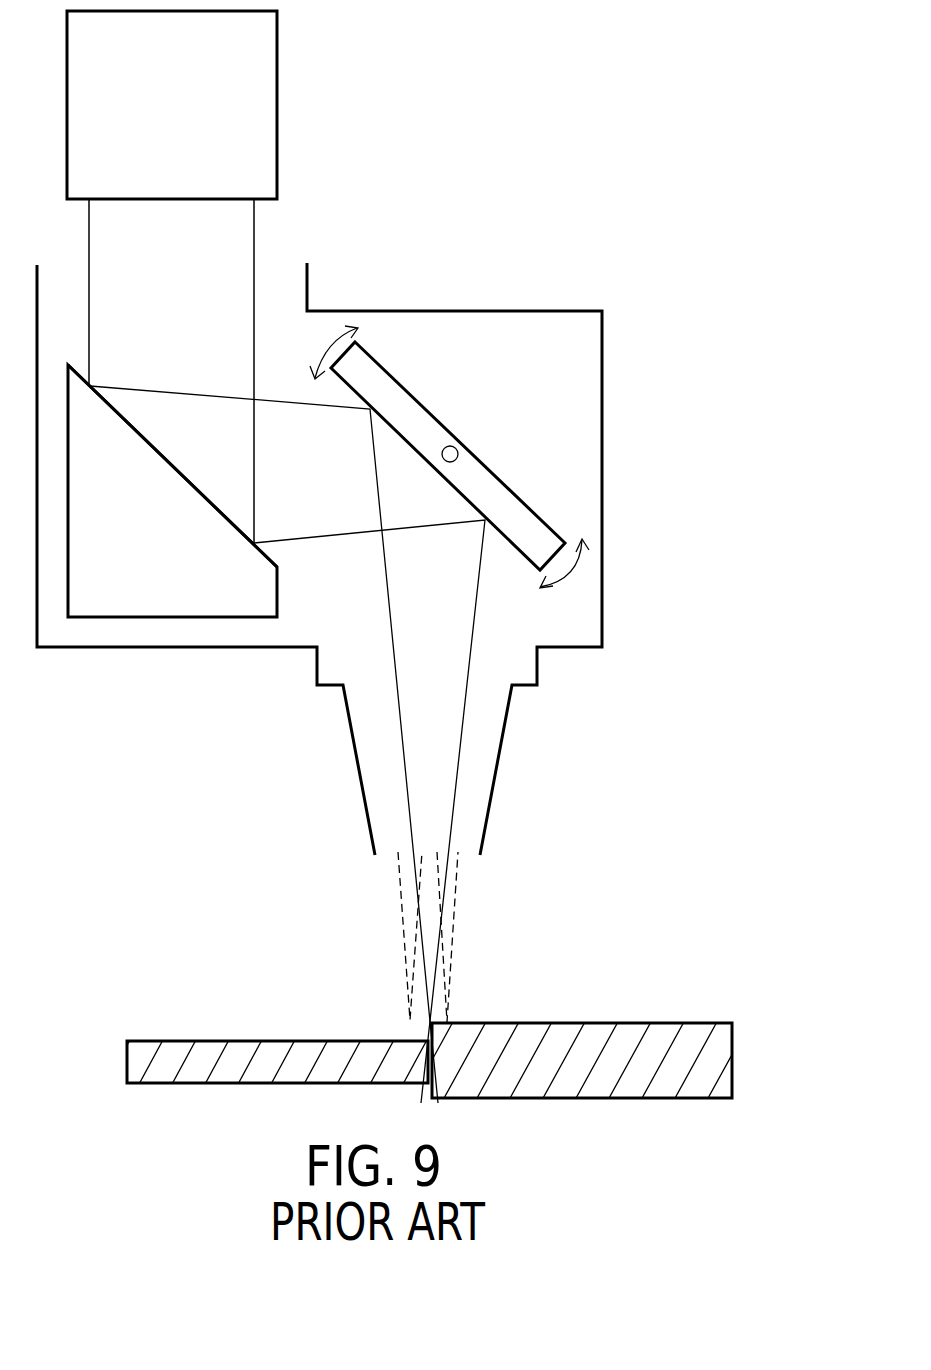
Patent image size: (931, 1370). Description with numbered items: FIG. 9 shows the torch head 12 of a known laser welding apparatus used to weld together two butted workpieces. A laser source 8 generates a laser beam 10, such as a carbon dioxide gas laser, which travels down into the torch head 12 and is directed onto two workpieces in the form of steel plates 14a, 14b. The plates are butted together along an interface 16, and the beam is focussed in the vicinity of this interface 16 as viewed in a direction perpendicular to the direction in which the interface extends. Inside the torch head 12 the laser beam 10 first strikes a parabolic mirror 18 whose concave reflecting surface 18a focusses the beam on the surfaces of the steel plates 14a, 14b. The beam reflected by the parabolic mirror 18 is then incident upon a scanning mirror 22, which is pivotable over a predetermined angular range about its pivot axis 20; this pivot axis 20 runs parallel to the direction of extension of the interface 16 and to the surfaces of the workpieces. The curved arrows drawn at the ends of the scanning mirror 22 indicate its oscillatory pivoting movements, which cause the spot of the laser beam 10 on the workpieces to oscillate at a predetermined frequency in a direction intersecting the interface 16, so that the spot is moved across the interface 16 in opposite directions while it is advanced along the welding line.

The laser source 8 is at (262, 93).
The laser beam 10 is at (253, 248).
The torch head 12 is at (557, 253).
The steel plate 14a is at (560, 1035).
The steel plate 14b is at (280, 1052).
The interface 16 is at (440, 1013).
The parabolic mirror 18 is at (128, 605).
The concave reflecting surface 18a is at (199, 499).
The pivot axis 20 is at (457, 448).
The scanning mirror 22 is at (542, 537).